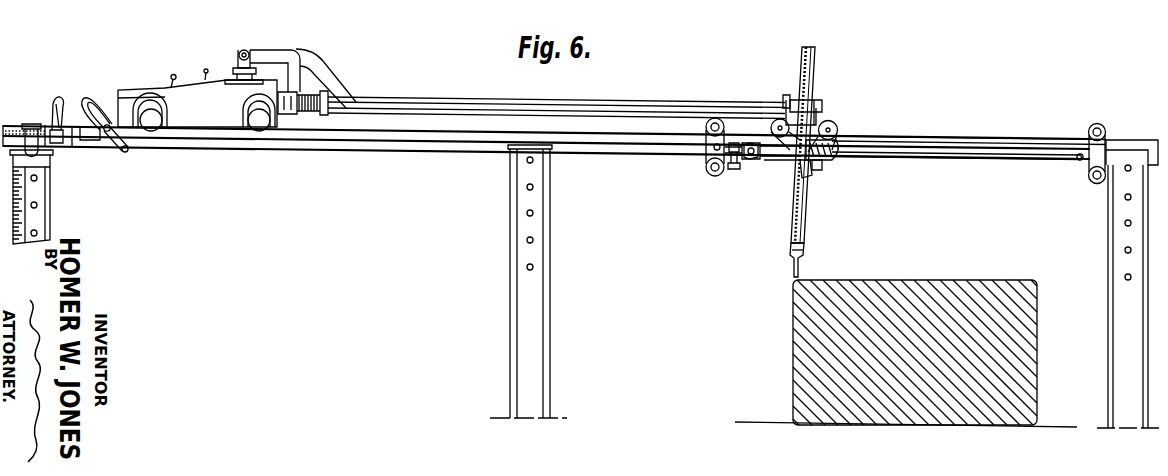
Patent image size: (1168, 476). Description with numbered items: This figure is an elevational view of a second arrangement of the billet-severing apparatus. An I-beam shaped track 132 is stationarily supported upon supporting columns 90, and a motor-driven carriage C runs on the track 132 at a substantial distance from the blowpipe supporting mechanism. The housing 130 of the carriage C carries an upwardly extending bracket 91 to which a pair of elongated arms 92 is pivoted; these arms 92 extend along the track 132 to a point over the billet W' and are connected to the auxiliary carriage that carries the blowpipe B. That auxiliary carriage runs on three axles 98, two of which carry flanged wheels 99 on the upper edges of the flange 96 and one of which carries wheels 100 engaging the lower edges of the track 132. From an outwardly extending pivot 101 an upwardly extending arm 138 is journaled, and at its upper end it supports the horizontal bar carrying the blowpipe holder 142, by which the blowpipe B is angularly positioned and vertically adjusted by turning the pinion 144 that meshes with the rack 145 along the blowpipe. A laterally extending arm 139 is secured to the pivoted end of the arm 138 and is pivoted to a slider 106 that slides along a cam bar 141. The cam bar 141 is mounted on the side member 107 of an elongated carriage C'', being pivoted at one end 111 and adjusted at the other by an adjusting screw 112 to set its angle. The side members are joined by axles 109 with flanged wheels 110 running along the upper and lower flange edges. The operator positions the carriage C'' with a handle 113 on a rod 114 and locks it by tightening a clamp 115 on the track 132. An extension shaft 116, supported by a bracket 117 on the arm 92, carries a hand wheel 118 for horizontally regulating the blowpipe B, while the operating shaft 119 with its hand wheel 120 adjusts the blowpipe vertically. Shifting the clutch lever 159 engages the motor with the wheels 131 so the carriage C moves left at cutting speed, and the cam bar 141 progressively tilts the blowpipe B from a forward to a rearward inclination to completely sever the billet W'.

The supporting columns 90 is at (52, 204).
The upwardly extending bracket 91 is at (240, 62).
The elongated arms 92 is at (326, 74).
The flange 96 is at (1133, 147).
The axles 98 is at (780, 122).
The flanged wheels 99 is at (777, 127).
The wheels 100 is at (808, 172).
The pivot 101 is at (822, 158).
The slider 106 is at (762, 160).
The side member 107 is at (1030, 143).
The axles 109 is at (714, 124).
The flanged wheels 110 is at (708, 120).
The pivoted end 111 is at (1079, 161).
The adjusting screw 112 is at (733, 170).
The handle 113 is at (58, 102).
The rod 114 is at (77, 141).
The clamp 115 is at (121, 152).
The extension shaft 116 is at (441, 100).
The bracket 117 is at (303, 72).
The hand wheel 118 is at (277, 95).
The operating shaft 119 is at (497, 110).
The hand wheel 120 is at (277, 108).
The housing 130 is at (139, 88).
The wheels 131 is at (150, 130).
The track 132 is at (435, 152).
The upwardly extending arm 138 is at (830, 154).
The laterally extending arm 139 is at (780, 149).
The cam bar 141 is at (943, 155).
The blowpipe holder 142 is at (815, 102).
The pinion 144 is at (819, 110).
The rack 145 is at (814, 67).
The clutch lever 159 is at (172, 80).
The blowpipe B is at (802, 54).
The motor-driven carriage C is at (110, 75).
The elongated carriage C'' is at (785, 231).
The billet W' is at (906, 353).